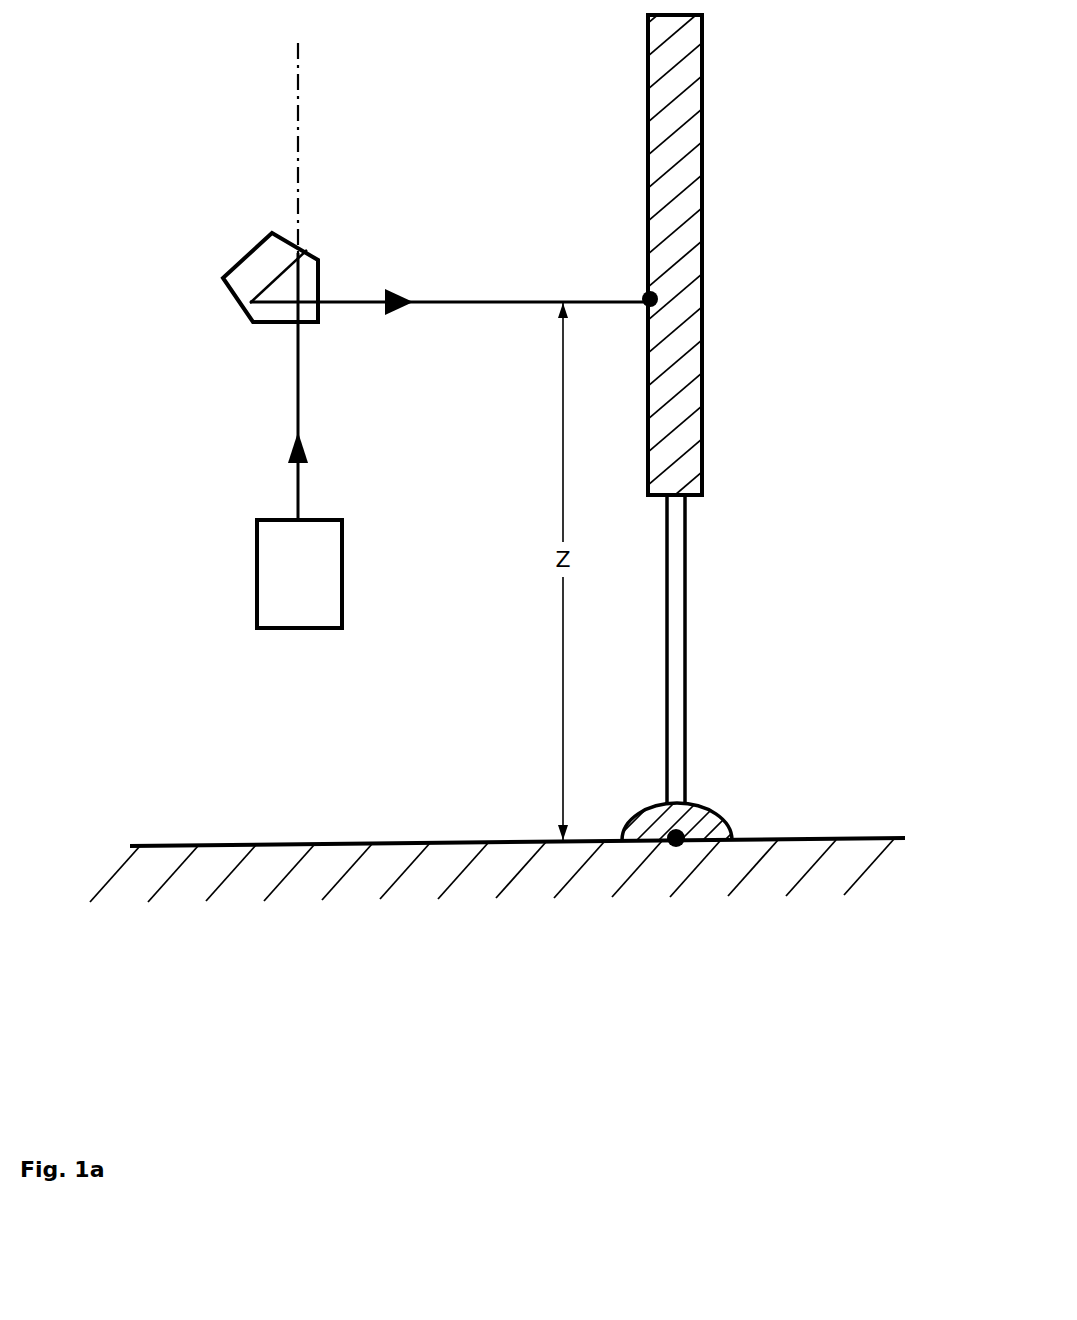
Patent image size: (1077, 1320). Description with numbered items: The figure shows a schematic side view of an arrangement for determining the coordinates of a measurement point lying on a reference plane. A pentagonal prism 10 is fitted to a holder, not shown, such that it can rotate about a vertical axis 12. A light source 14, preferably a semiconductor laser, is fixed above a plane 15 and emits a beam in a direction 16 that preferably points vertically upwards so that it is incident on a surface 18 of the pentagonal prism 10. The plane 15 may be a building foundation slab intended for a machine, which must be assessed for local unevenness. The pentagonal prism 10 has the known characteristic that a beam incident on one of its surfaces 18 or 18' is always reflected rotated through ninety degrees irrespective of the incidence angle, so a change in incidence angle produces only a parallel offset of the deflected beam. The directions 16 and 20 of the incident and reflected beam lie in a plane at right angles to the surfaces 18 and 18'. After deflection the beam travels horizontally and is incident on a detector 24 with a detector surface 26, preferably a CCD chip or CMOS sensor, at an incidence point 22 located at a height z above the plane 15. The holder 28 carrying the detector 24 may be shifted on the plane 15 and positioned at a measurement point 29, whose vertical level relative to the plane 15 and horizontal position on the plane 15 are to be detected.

The pentagonal prism 10 is at (305, 253).
The vertical axis 12 is at (300, 143).
The light source 14 is at (303, 570).
The plane 15 is at (362, 843).
The direction 16 is at (302, 388).
The surface 18 is at (336, 372).
The surface 18' is at (370, 256).
The direction 20 is at (455, 297).
The incidence point 22 is at (646, 296).
The detector 24 is at (703, 117).
The detector surface 26 is at (647, 117).
The holder 28 is at (688, 607).
The measurement point 29 is at (683, 830).